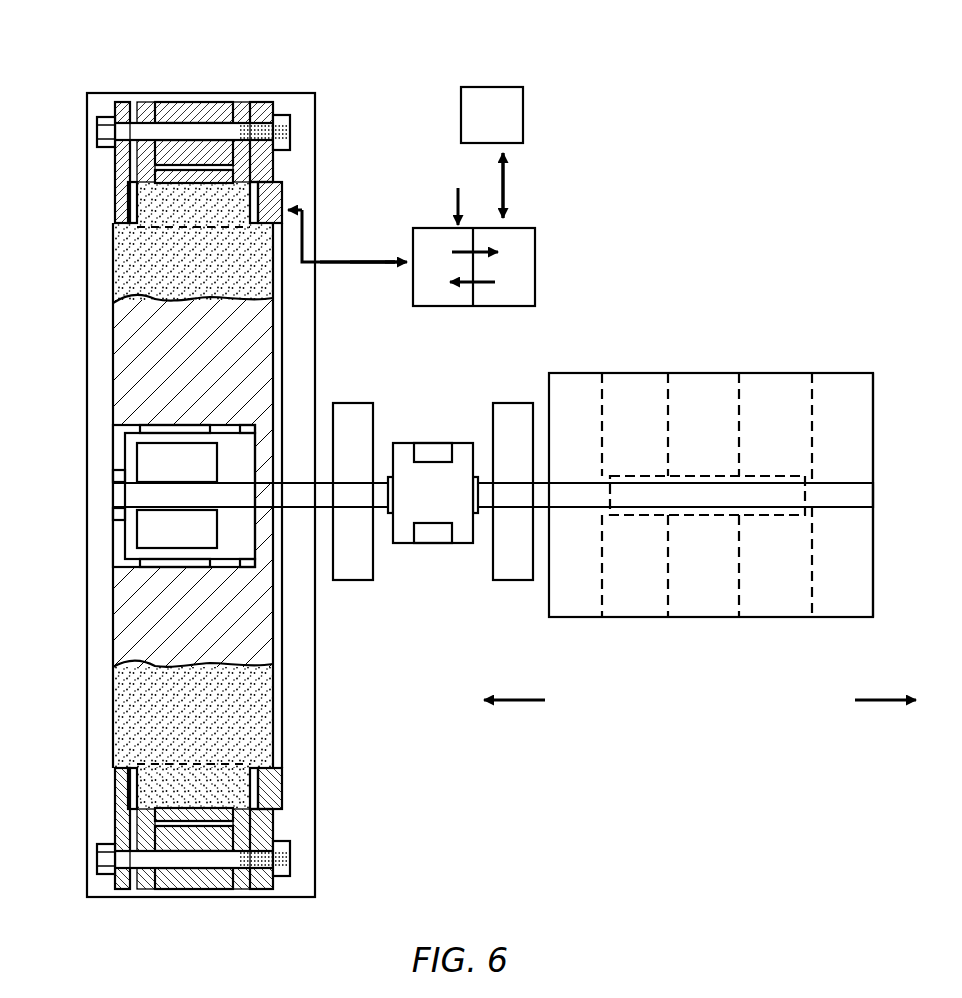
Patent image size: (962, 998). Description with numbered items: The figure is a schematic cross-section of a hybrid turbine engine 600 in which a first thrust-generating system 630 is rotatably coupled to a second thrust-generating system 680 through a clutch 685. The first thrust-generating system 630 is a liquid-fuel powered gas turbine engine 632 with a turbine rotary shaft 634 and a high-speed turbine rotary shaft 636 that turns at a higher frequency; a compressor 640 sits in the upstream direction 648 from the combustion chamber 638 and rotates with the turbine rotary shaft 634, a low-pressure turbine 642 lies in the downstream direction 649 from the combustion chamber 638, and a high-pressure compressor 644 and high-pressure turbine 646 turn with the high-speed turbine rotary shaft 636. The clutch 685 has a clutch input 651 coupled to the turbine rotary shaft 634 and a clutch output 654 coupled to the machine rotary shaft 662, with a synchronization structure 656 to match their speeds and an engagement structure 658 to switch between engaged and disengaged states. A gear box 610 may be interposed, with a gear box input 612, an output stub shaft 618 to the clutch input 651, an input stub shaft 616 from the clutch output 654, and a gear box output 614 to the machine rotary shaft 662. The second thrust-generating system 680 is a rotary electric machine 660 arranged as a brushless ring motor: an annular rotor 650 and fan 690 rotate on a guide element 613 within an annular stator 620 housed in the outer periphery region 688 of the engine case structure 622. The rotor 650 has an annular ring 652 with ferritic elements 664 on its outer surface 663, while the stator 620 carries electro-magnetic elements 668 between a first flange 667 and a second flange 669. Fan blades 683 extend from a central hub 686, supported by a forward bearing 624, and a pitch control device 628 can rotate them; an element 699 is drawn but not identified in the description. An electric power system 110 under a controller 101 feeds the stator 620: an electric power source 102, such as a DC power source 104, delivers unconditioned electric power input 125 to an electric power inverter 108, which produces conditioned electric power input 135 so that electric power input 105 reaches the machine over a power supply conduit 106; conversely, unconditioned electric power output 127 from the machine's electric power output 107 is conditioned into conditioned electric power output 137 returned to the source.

The hybrid turbine engine 600 is at (772, 273).
The controller 101 is at (477, 124).
The electric power source 102 is at (518, 227).
The DC power source 104 is at (520, 249).
The unconditioned electric power input 125 is at (505, 256).
The conditioned electric power output 137 is at (480, 298).
The electric power system 110 is at (443, 184).
The electric power input 105 is at (351, 246).
The power supply conduit 106 is at (382, 261).
The electric power output 107 is at (398, 246).
The electric power inverter 108 is at (448, 297).
The conditioned electric power input 135 is at (332, 267).
The unconditioned electric power output 127 is at (395, 264).
The gear box 610 is at (353, 584).
The gear box input 612 is at (540, 464).
The gear box output 614 is at (323, 459).
The input stub shaft 616 is at (388, 497).
The output stub shaft 618 is at (483, 497).
The annular stator 620 is at (172, 100).
The engine case structure 622 is at (318, 733).
The forward bearing 624 is at (115, 475).
The pitch control device 628 is at (117, 437).
The first thrust-generating system 630 is at (651, 369).
The gas turbine engine 632 is at (738, 372).
The turbine rotary shaft 634 is at (580, 508).
The high-speed turbine rotary shaft 636 is at (638, 516).
The combustion chamber 638 is at (717, 618).
The compressor 640 is at (578, 618).
The turbine 642 is at (845, 618).
The high-pressure compressor 644 is at (641, 618).
The high-pressure turbine 646 is at (813, 372).
The upstream direction 648 is at (511, 736).
The downstream direction 649 is at (885, 736).
The annular rotor 650 is at (190, 135).
The clutch input 651 is at (476, 465).
The annular ring 652 is at (187, 202).
The clutch output 654 is at (393, 458).
The synchronization structure 656 is at (433, 463).
The engagement structure 658 is at (455, 535).
The rotary electric machine 660 is at (93, 66).
The machine rotary shaft 662 is at (228, 522).
The outer surface 663 is at (202, 183).
The ferritic elements 664 is at (204, 176).
The first flange 667 is at (118, 102).
The electro-magnetic elements 668 is at (165, 134).
The second flange 669 is at (266, 102).
The second thrust-generating system 680 is at (110, 675).
The fan blades 683 is at (155, 688).
The clutch 685 is at (443, 440).
The central hub 686 is at (152, 423).
The outer periphery region 688 is at (82, 803).
The fan 690 is at (110, 637).
The lower end plate 699 is at (266, 890).
The guide element 613 is at (265, 193).